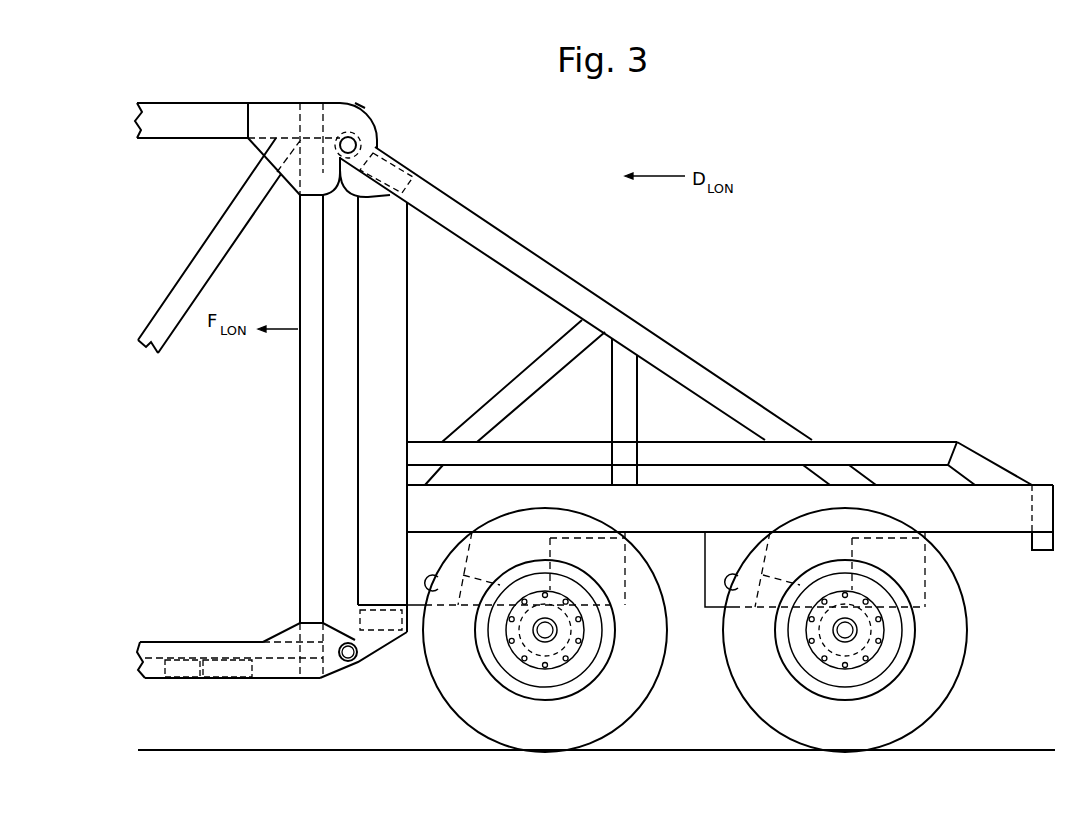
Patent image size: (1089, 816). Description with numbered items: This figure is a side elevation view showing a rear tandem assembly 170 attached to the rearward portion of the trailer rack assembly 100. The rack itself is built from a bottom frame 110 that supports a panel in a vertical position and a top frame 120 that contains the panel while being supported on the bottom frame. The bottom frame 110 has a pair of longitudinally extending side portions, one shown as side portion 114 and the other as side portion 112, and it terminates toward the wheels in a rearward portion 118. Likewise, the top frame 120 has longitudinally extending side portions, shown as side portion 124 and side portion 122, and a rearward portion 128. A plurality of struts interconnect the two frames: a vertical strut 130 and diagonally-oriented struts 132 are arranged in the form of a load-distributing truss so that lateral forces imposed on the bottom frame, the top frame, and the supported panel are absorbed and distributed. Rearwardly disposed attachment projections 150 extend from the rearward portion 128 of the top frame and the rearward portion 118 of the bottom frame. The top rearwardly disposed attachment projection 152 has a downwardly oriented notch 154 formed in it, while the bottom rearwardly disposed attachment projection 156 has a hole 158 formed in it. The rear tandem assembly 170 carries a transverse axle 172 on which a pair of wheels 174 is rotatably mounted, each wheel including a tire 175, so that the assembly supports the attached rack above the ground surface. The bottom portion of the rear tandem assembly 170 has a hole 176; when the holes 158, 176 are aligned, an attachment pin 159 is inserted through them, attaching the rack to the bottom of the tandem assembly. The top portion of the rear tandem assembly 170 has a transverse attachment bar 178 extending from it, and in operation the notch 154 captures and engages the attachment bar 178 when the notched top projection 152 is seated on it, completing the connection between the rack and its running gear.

The trailer rack assembly 100 is at (381, 76).
The bottom frame 110 is at (163, 648).
The side portion 112 is at (212, 643).
The side portion 114 is at (185, 640).
The rearward portion 118 is at (203, 695).
The top frame 120 is at (178, 128).
The side portion 122 is at (207, 133).
The side portion 124 is at (185, 102).
The rearward portion 128 is at (240, 84).
The strut 130 is at (305, 420).
The diagonally-oriented struts 132 is at (157, 320).
The rearwardly disposed attachment projections 150 is at (342, 214).
The top rearwardly disposed attachment projection 152 is at (373, 127).
The notch 154 is at (400, 188).
The bottom rearwardly disposed attachment projection 156 is at (320, 667).
The hole 158 is at (352, 663).
The attachment pin 159 is at (362, 657).
The rear tandem assembly 170 is at (845, 405).
The transverse axle 172 is at (848, 640).
The wheels 174 is at (882, 643).
The tire 175 is at (953, 603).
The hole 176 is at (330, 677).
The transverse attachment bar 178 is at (362, 140).